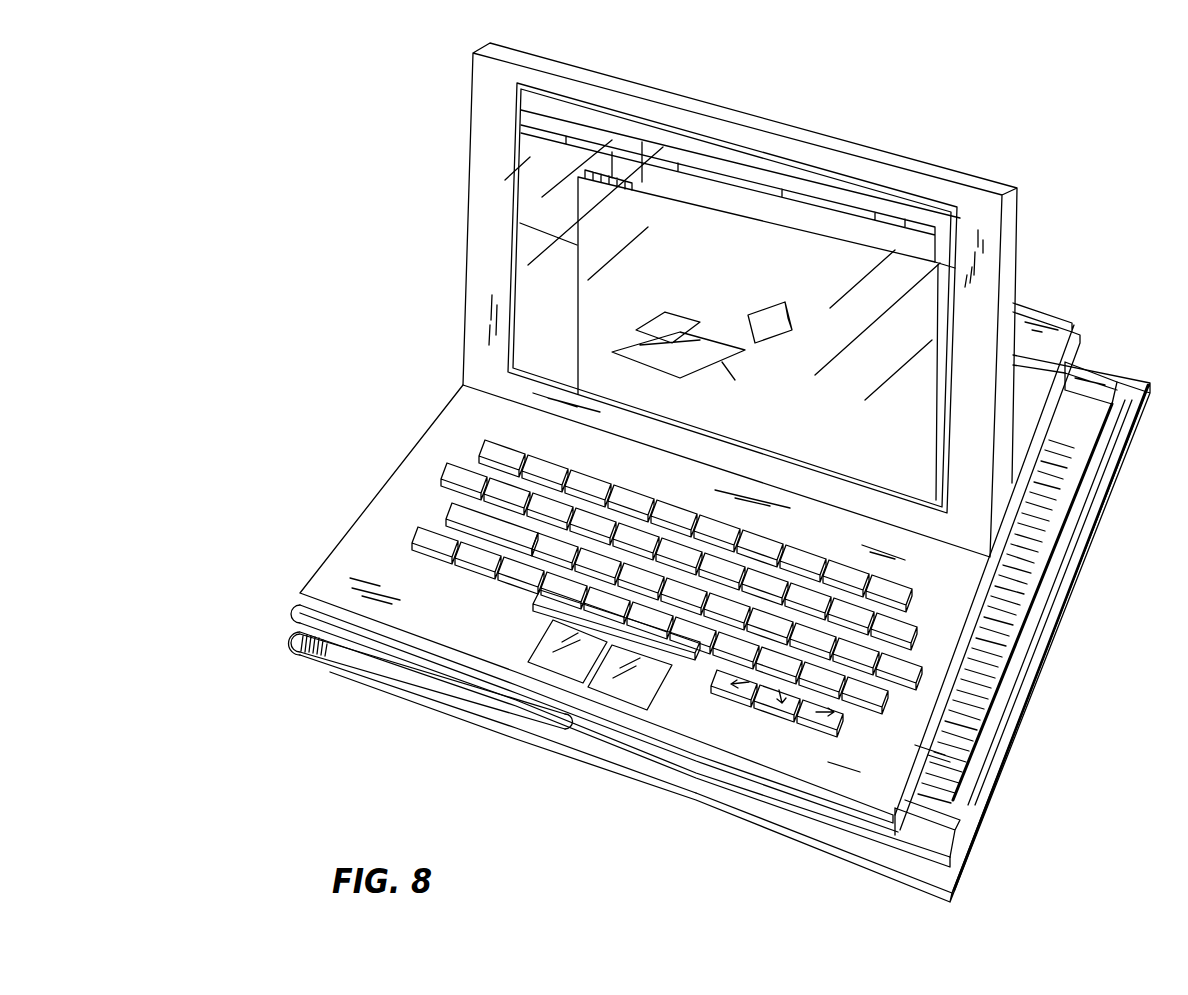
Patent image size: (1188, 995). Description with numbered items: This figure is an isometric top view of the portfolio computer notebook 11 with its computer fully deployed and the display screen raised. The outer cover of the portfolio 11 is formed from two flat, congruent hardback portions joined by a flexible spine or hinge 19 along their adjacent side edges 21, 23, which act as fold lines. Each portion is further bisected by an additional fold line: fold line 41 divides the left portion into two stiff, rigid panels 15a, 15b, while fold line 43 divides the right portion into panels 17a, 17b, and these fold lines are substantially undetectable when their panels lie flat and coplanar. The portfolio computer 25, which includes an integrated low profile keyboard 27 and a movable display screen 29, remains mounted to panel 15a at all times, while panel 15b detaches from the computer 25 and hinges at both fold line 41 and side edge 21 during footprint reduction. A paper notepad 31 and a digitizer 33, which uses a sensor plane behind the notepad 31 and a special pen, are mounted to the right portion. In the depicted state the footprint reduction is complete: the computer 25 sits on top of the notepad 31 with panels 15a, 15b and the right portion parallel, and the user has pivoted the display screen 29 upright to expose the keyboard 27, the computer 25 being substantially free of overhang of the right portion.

The portfolio computer notebook 11 is at (340, 453).
The panel 15a is at (348, 638).
The panel 15b is at (433, 680).
The panel 17a is at (507, 733).
The panel 17b is at (790, 840).
The flexible spine or hinge 19 is at (290, 648).
The side edge 21 is at (290, 629).
The side edge 23 is at (305, 655).
The portfolio computer 25 is at (456, 439).
The keyboard 27 is at (432, 540).
The display screen 29 is at (528, 157).
The paper notepad 31 is at (1010, 608).
The digitizer 33 is at (950, 835).
The fold line 41 is at (568, 724).
The fold line 43 is at (632, 780).